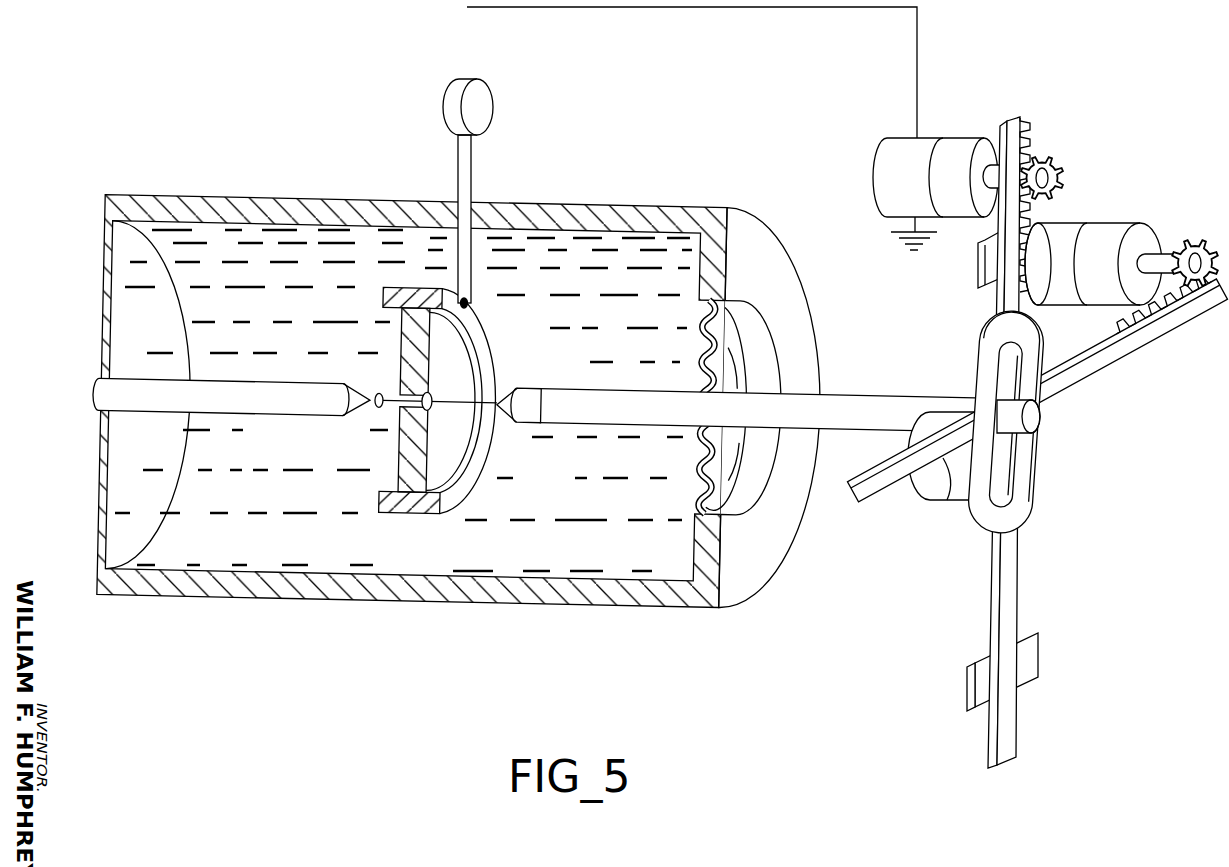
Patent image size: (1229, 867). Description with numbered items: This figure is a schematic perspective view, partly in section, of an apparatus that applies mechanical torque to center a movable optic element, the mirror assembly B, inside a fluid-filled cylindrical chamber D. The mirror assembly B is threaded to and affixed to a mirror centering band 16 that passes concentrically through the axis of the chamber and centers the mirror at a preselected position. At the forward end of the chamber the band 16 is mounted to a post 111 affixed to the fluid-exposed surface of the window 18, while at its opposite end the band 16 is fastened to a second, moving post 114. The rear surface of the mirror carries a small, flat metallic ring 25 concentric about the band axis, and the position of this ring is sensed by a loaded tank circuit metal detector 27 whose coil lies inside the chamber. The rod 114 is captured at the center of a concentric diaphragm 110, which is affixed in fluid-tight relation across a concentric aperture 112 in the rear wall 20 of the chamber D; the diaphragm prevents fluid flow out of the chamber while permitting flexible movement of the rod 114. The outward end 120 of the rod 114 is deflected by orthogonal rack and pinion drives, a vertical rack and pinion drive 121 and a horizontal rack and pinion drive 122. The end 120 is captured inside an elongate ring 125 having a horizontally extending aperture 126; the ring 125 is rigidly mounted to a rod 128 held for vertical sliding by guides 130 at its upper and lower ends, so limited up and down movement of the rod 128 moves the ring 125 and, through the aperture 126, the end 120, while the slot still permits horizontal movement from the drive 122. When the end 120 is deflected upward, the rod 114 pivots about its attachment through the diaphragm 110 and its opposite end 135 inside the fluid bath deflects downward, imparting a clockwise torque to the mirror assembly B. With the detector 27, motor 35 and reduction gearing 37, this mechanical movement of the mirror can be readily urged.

The window 18 is at (148, 335).
The rear wall 20 is at (750, 232).
The chamber D is at (550, 608).
The post 111 is at (168, 404).
The mirror centering band 16 is at (374, 404).
The loaded tank circuit metal detector 27 is at (484, 108).
The mirror assembly B is at (488, 325).
The metallic ring 25 is at (492, 373).
The end of rod 135 is at (503, 412).
The aperture 112 is at (728, 308).
The diaphragm 110 is at (693, 478).
The moving post 114 is at (853, 398).
The motor 35 is at (910, 147).
The reduction gearing 37 is at (958, 157).
The vertical rack and pinion drive 121 is at (1034, 150).
The horizontal rack and pinion drive 122 is at (1197, 238).
The guides 130 is at (978, 264).
The rod 128 is at (1003, 308).
The elongate ring 125 is at (950, 418).
The end of rod 120 is at (1033, 419).
The horizontally extending aperture 126 is at (950, 474).